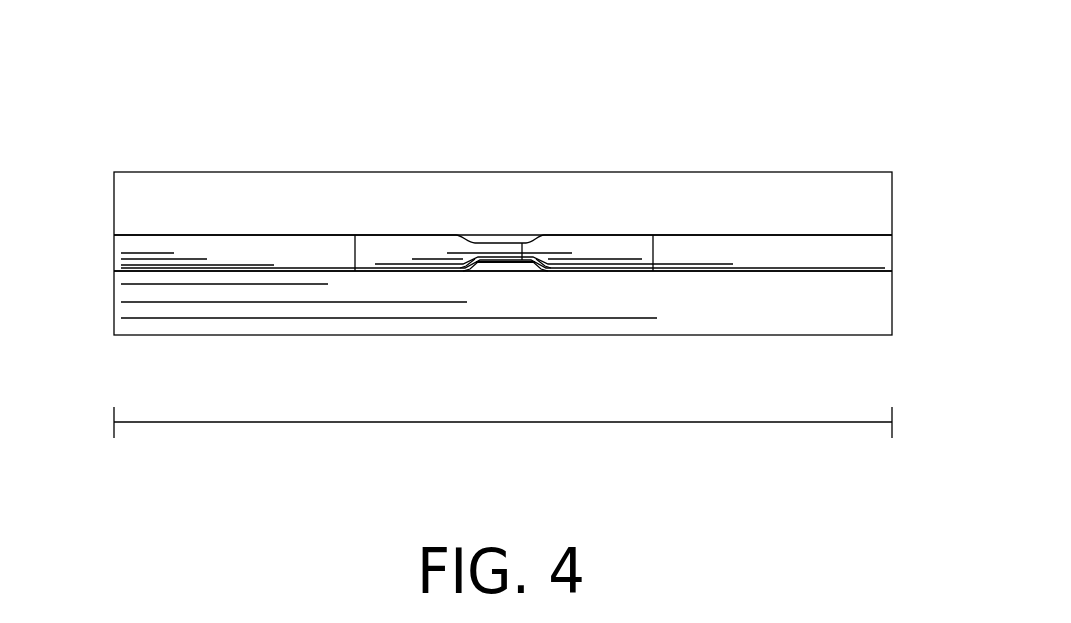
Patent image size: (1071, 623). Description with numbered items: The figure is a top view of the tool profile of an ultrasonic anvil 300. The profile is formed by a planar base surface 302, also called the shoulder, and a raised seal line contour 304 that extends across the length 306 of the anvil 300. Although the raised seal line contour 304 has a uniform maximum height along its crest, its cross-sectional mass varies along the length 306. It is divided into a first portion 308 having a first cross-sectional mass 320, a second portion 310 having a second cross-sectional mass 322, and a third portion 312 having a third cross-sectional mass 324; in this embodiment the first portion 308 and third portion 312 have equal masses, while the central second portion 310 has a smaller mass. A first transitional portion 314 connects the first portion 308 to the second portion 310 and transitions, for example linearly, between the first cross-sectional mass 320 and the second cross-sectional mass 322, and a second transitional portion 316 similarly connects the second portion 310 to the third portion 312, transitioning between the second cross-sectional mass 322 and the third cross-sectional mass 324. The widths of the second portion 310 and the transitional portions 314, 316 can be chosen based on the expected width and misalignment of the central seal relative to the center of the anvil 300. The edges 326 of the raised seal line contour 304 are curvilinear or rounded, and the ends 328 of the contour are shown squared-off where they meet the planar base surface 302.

The ultrasonic anvil 300 is at (619, 101).
The planar base surface 302 is at (815, 322).
The raised seal line contour 304 is at (157, 245).
The length 306 is at (284, 423).
The first portion 308 is at (282, 243).
The second portion 310 is at (501, 245).
The third portion 312 is at (770, 252).
The first transitional portion 314 is at (473, 272).
The second transitional portion 316 is at (533, 272).
The first cross-sectional mass 320 is at (370, 250).
The second cross-sectional mass 322 is at (523, 252).
The third cross-sectional mass 324 is at (656, 252).
The edges 326 is at (857, 237).
The ends 328 is at (115, 259).